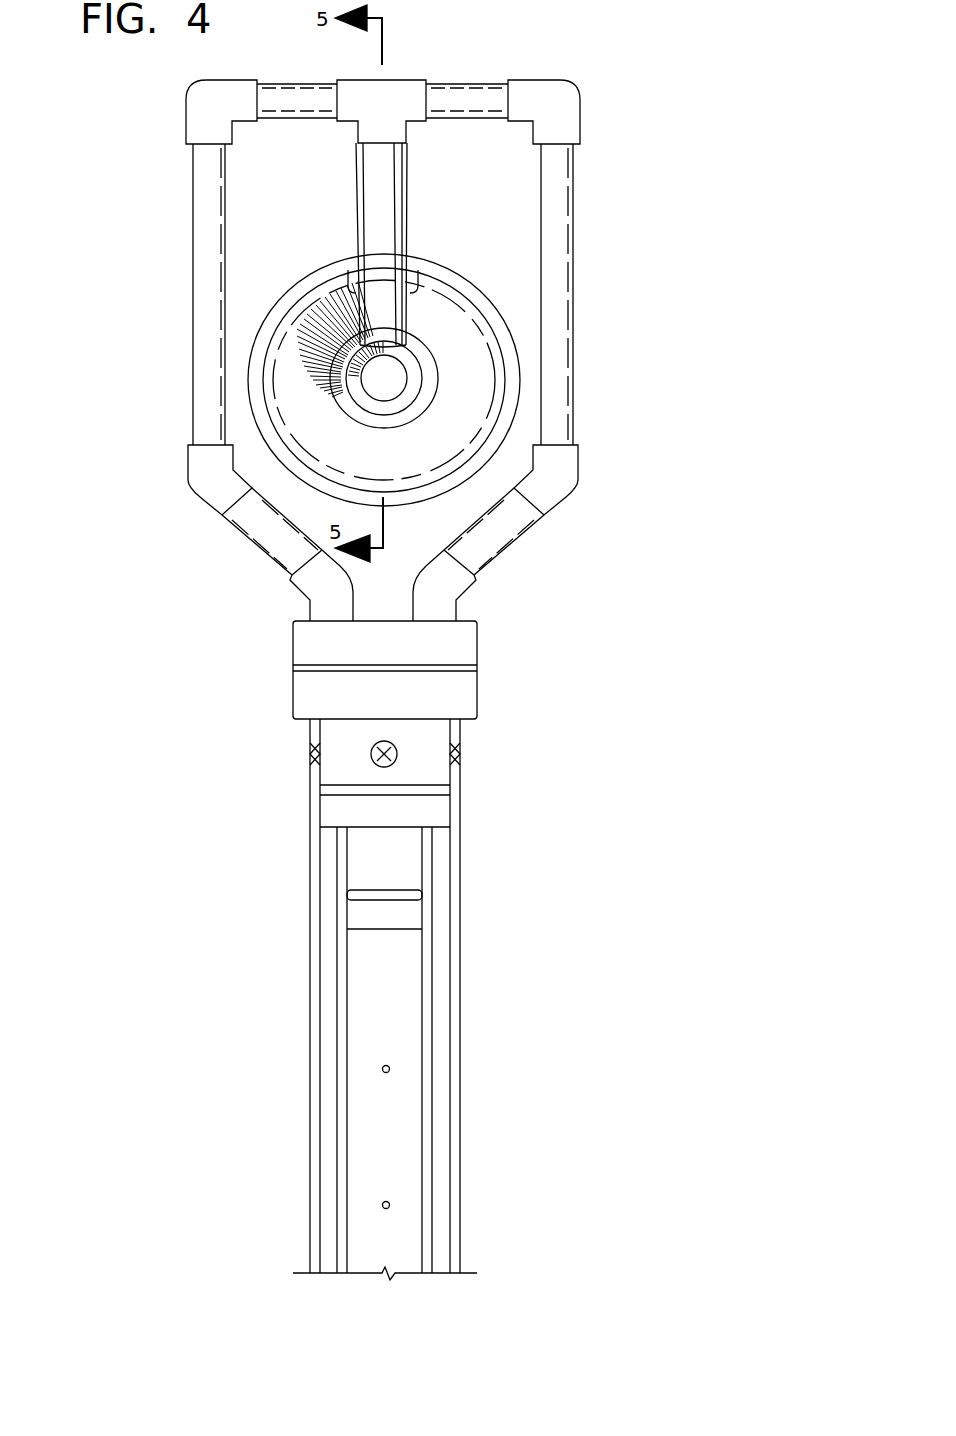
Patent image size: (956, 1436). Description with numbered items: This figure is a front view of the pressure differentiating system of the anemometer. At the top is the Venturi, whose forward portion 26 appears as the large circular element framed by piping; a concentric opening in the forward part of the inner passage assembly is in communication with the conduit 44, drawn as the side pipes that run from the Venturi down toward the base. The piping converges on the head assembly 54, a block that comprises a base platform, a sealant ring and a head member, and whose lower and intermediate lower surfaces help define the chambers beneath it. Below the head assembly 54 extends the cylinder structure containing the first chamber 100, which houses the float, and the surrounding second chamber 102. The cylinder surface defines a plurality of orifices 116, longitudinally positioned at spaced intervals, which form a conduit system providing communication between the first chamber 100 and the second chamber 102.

The forward portion 26 is at (450, 276).
The conduit 44 is at (205, 316).
The head assembly 54 is at (497, 659).
The first chamber 100 is at (411, 982).
The second chamber 102 is at (443, 1013).
The orifices 116 is at (390, 1070).